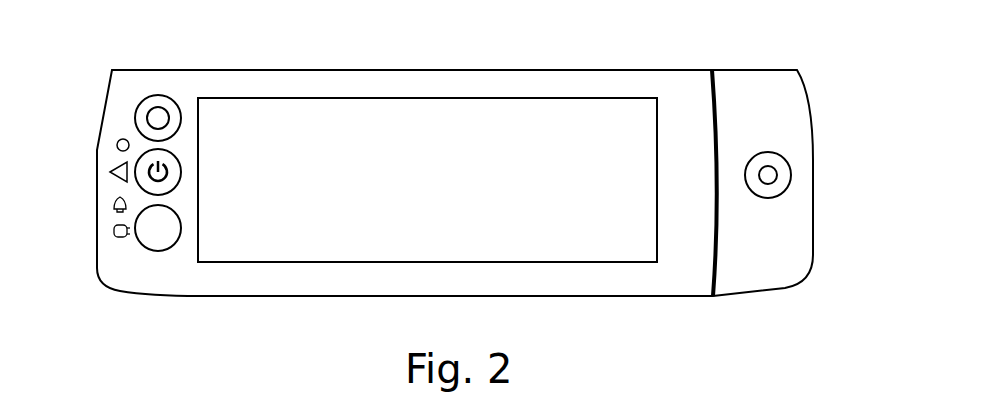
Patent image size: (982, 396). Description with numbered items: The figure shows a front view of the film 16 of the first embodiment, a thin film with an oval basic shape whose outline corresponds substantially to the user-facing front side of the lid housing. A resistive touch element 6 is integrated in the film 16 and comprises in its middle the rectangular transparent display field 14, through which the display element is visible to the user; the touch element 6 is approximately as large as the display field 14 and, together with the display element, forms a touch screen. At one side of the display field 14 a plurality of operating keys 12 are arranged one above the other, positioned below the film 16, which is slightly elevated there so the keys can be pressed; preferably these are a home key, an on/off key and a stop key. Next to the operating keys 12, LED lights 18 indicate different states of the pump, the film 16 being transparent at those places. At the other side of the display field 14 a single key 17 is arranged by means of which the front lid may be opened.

The touch element 6 is at (252, 247).
The operating keys 12 is at (137, 124).
The display field 14 is at (628, 260).
The film 16 is at (736, 47).
The single key 17 is at (770, 173).
The LED lights 18 is at (114, 231).